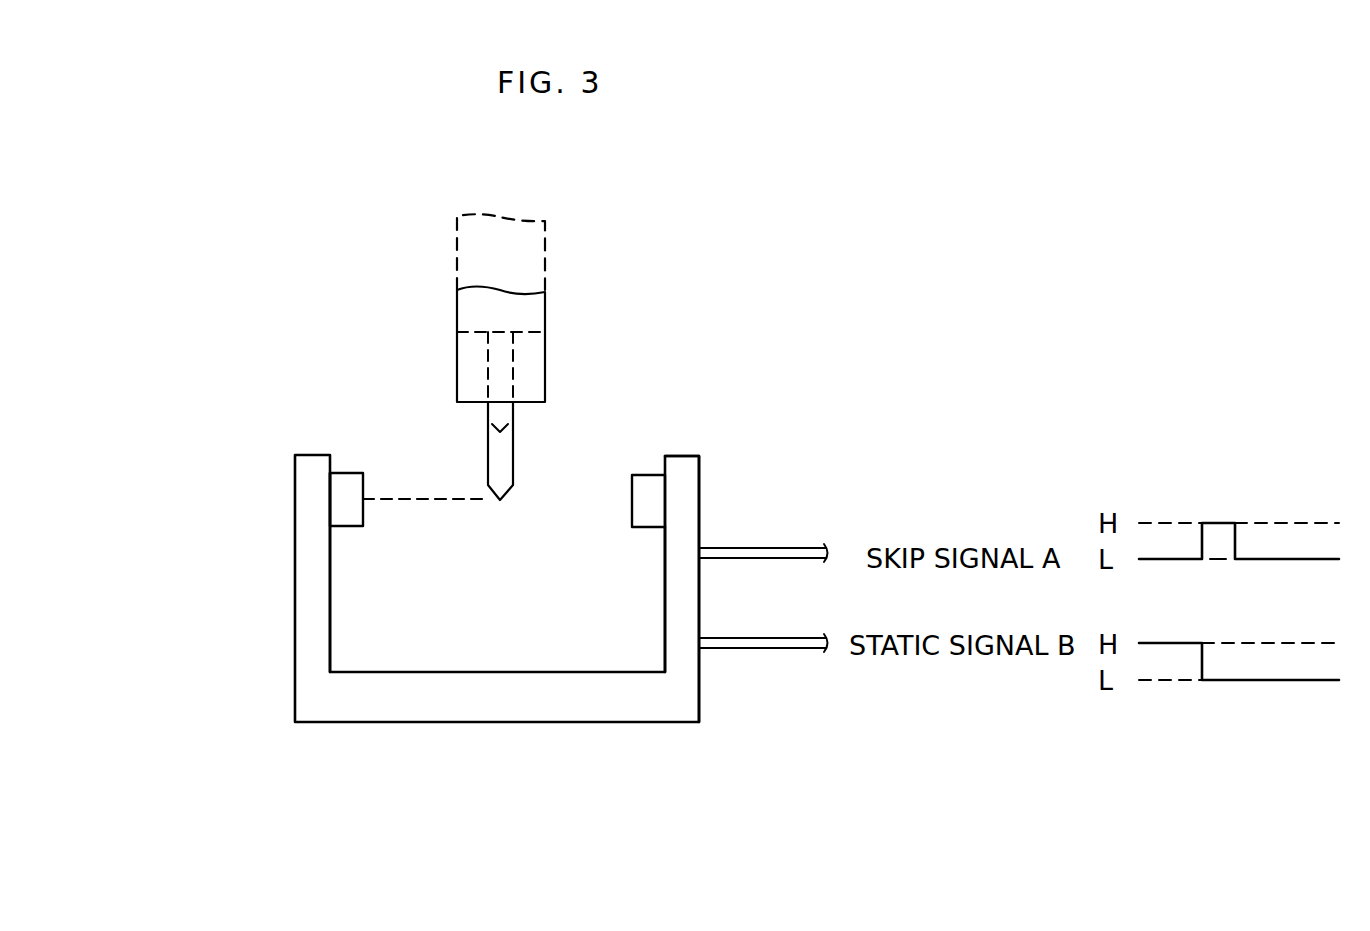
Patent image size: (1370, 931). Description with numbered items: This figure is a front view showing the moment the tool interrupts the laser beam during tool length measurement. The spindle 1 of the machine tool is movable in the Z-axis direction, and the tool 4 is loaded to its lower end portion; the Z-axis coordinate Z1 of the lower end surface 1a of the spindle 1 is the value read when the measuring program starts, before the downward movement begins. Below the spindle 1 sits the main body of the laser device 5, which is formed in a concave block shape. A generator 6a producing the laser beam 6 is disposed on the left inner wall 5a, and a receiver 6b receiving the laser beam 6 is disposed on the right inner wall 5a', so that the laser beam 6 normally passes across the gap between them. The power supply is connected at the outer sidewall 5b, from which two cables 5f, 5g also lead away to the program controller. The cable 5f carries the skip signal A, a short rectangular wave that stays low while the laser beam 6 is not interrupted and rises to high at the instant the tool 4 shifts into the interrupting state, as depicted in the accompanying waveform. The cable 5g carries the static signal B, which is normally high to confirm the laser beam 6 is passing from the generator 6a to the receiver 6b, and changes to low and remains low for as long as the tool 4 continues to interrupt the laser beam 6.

The spindle 1 is at (470, 343).
The lower end surface 1a is at (470, 403).
The Z-axis coordinate Z1 is at (545, 332).
The tool 4 is at (505, 446).
The laser device 5 is at (490, 555).
The left inner wall 5a is at (377, 572).
The right inner wall 5a' is at (615, 599).
The outer sidewall 5b is at (700, 480).
The cable 5f is at (773, 548).
The cable 5g is at (760, 650).
The laser beam 6 is at (433, 500).
The generator 6a is at (350, 485).
The receiver 6b is at (640, 520).